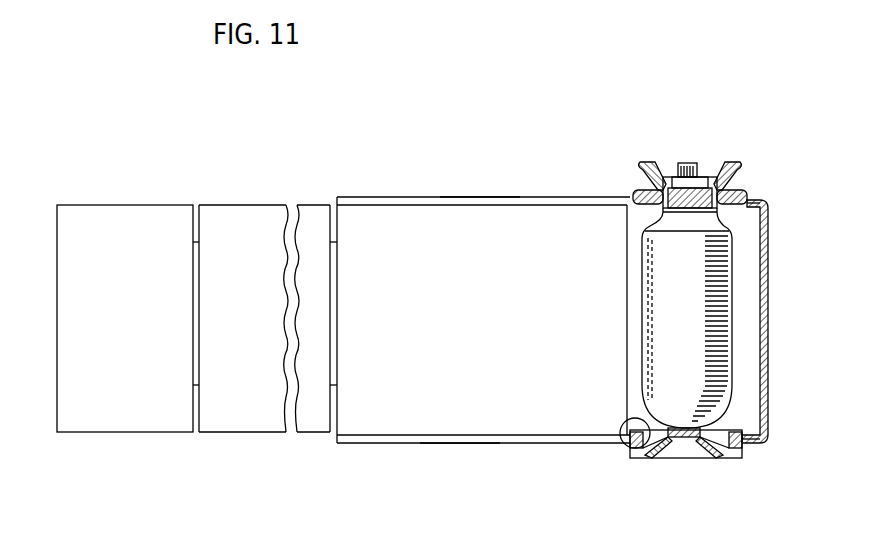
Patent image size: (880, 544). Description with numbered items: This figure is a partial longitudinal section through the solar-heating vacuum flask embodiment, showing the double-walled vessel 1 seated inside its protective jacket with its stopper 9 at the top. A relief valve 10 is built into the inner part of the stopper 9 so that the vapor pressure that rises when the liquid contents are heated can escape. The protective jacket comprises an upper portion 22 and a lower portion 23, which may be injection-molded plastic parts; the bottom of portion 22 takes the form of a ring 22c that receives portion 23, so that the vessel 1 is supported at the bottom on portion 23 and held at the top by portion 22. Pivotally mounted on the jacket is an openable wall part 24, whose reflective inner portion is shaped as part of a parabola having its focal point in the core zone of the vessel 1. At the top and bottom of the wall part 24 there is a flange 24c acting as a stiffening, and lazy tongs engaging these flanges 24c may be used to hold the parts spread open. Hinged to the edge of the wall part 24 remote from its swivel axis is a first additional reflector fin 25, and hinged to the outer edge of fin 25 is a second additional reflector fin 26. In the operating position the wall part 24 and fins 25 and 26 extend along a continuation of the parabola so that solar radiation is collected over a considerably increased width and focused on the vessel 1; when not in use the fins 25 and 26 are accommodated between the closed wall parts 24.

The double-walled vessel 1 is at (723, 345).
The stopper 9 is at (703, 182).
The relief valve 10 is at (681, 165).
The protective jacket portion 22 is at (632, 192).
The ring 22c is at (621, 441).
The protective jacket portion 23 is at (658, 456).
The wall part 24 is at (422, 215).
The flange 24c is at (480, 200).
The first additional reflector fin 25 is at (238, 225).
The second additional reflector fin 26 is at (133, 225).